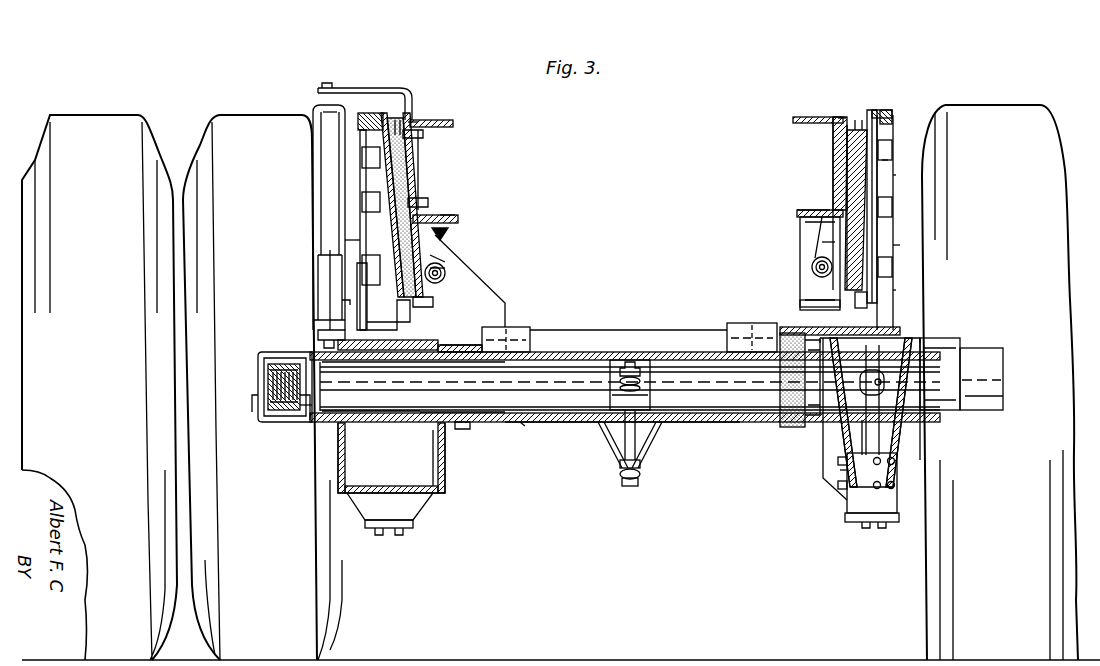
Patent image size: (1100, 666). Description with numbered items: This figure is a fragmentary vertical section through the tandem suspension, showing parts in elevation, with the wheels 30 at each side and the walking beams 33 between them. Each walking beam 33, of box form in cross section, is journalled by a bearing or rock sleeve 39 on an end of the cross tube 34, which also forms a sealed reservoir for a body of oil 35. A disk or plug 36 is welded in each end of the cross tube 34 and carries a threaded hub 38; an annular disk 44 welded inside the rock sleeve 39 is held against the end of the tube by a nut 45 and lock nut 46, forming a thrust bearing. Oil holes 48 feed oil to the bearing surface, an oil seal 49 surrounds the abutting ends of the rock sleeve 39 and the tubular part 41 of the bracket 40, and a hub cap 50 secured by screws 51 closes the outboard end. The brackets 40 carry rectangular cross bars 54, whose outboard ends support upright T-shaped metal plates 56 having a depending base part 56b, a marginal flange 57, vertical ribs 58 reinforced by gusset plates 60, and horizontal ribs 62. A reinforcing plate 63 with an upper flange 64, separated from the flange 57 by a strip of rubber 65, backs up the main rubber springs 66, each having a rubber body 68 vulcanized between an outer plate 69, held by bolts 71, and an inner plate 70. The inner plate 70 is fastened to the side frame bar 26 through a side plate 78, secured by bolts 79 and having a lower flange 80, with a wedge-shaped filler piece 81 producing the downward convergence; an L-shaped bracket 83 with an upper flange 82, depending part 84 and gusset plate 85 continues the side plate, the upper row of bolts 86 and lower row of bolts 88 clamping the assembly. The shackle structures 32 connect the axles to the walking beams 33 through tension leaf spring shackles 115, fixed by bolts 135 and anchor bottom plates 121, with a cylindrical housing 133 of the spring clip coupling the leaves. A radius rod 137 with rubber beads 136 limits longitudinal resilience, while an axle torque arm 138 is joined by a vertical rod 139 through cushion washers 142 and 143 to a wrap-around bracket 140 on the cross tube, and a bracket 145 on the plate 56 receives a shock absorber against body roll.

The side frame bar 26 is at (452, 121).
The wheel 30 is at (200, 140).
The shackle structure 32 is at (916, 456).
The walking beam 33 is at (437, 505).
The cross tube 34 is at (680, 360).
The body of oil 35 is at (459, 387).
The disk or plug 36 is at (320, 386).
The threaded hub 38 is at (262, 383).
The bearing or rock sleeve 39 is at (392, 430).
The bracket 40 is at (525, 425).
The tubular part 41 is at (512, 425).
The annular disk 44 is at (300, 424).
The nut 45 is at (292, 422).
The lock nut 46 is at (272, 360).
The oil holes 48 is at (432, 430).
The oil seal 49 is at (462, 431).
The hub cap 50 is at (1006, 380).
The screws 51 is at (966, 342).
The cross bar 54 is at (712, 332).
The upright metal plate 56 is at (895, 175).
The depending base part 56b is at (345, 305).
The marginal flange 57 is at (345, 142).
The vertical rib 58 is at (345, 186).
The gusset plate 60 is at (510, 304).
The horizontal rib 62 is at (362, 160).
The reinforcing plate 63 is at (360, 240).
The upper flange 64 is at (365, 112).
The strip of rubber 65 is at (320, 120).
The main rubber spring 66 is at (362, 200).
The rubber body 68 is at (400, 176).
The outer plate 69 is at (410, 330).
The inner plate 70 is at (430, 320).
The bolts 71 is at (376, 128).
The side plate 78 is at (420, 160).
The bolts 79 is at (426, 134).
The flange 80 is at (448, 217).
The wedge-shaped filler piece 81 is at (415, 120).
The upper flange 82 is at (452, 225).
The L-shaped bracket 83 is at (447, 238).
The depending part 84 is at (446, 276).
The gusset plate 85 is at (445, 262).
The upper row of bolts 86 is at (402, 118).
The lower row of bolts 88 is at (433, 301).
The tension leaf spring shackle 115 is at (836, 460).
The bottom plate 121 is at (392, 536).
The cylindrical housing 133 is at (858, 372).
The bolts 135 is at (897, 486).
The rubber washers or beads 136 is at (448, 268).
The radius rod 137 is at (448, 280).
The axle torque arm 138 is at (612, 440).
The vertical rod 139 is at (648, 437).
The wrap-around attachment bracket 140 is at (614, 358).
The rubber cushion washers 142 is at (645, 472).
The cushion washers 143 is at (618, 380).
The bracket 145 is at (330, 338).